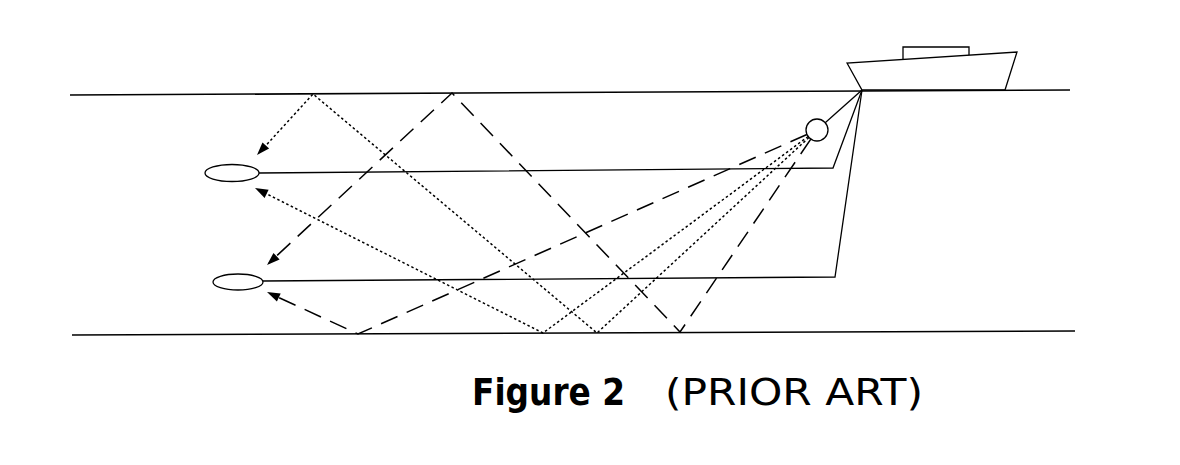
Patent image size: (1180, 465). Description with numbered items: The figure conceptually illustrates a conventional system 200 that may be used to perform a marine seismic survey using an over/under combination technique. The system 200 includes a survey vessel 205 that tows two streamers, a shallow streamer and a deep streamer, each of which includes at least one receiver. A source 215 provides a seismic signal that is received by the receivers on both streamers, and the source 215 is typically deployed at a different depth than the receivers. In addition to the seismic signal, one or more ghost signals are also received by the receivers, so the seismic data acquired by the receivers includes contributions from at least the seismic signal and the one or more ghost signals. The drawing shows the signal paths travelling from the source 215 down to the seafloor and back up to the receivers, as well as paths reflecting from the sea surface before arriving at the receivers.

The conventional system 200 is at (1100, 131).
The survey vessel 205 is at (849, 74).
The source 215 is at (829, 133).